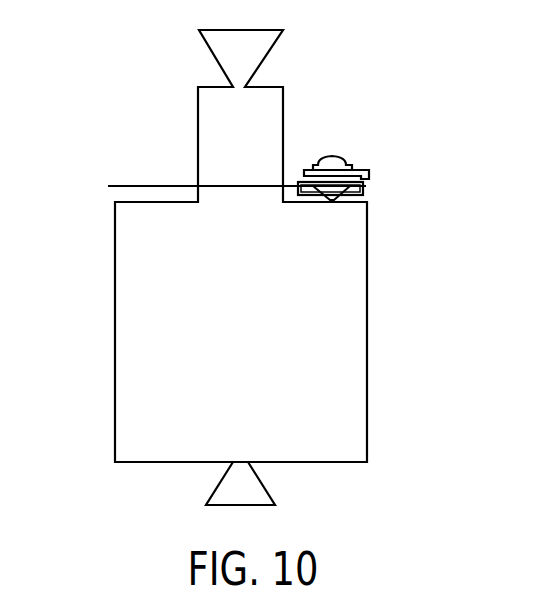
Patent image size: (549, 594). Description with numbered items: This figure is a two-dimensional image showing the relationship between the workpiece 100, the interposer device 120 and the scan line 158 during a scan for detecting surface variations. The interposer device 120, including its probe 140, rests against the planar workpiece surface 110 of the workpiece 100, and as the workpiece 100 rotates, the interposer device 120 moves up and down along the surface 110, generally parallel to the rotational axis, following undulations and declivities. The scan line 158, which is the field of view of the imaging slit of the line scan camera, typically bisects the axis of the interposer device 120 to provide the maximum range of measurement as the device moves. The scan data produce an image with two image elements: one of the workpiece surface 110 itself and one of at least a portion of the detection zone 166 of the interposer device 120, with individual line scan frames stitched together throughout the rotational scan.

The workpiece 100 is at (367, 243).
The workpiece surface 110 is at (367, 203).
The interposer device 120 is at (338, 157).
The probe 140 is at (378, 157).
The scan line 158 is at (118, 186).
The detection zone 166 is at (365, 190).